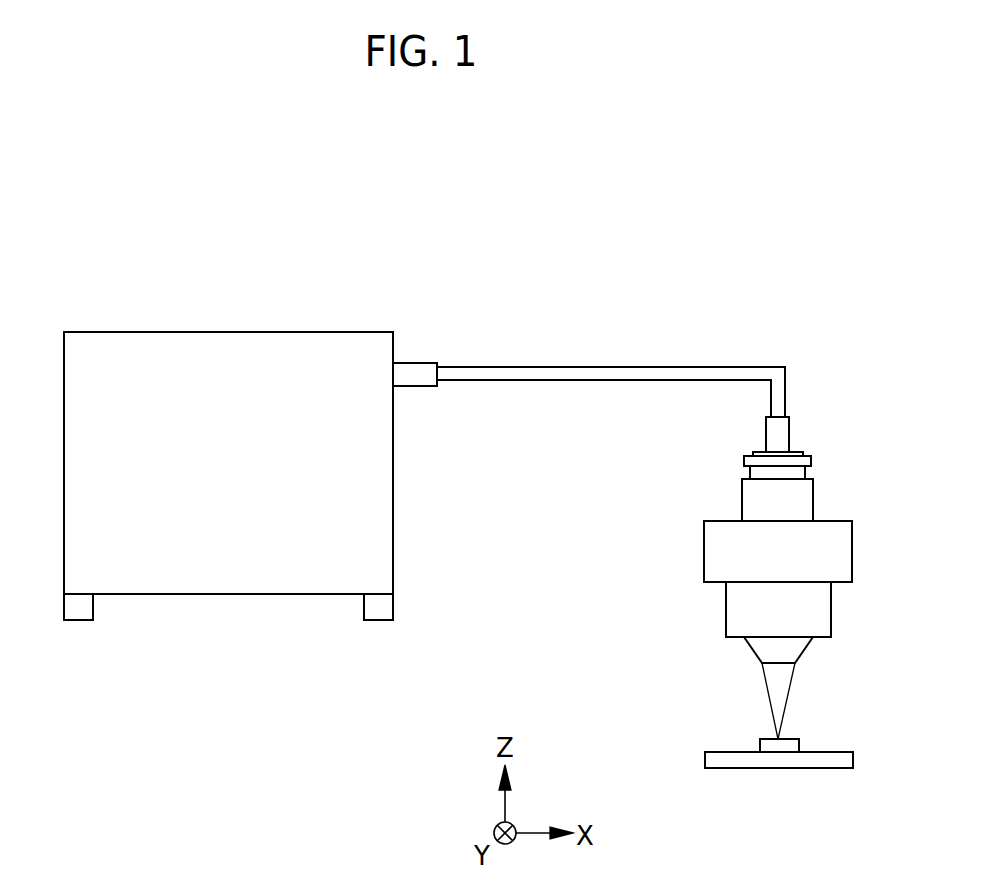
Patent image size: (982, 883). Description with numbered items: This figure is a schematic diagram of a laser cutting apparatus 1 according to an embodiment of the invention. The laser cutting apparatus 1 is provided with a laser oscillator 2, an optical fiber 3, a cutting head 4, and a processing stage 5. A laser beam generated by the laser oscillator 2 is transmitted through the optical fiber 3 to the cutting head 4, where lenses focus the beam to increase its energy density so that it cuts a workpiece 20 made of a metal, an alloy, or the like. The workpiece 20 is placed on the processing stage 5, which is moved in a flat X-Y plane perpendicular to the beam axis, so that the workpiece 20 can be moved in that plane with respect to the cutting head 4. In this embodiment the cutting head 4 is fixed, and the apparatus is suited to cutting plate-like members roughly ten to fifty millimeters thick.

The laser cutting apparatus 1 is at (462, 226).
The laser oscillator 2 is at (229, 332).
The optical fiber 3 is at (599, 367).
The cutting head 4 is at (704, 550).
The processing stage 5 is at (705, 757).
The workpiece 20 is at (760, 748).